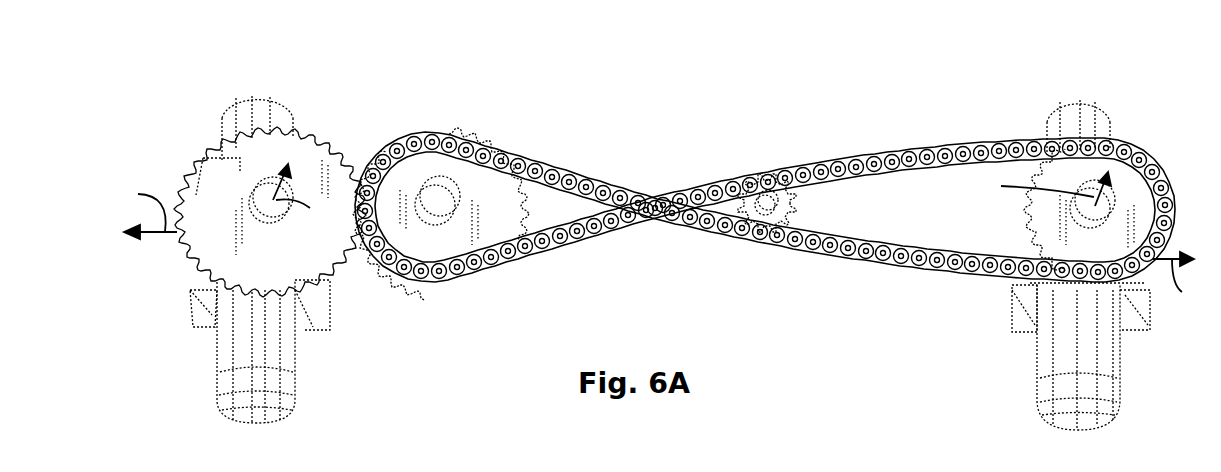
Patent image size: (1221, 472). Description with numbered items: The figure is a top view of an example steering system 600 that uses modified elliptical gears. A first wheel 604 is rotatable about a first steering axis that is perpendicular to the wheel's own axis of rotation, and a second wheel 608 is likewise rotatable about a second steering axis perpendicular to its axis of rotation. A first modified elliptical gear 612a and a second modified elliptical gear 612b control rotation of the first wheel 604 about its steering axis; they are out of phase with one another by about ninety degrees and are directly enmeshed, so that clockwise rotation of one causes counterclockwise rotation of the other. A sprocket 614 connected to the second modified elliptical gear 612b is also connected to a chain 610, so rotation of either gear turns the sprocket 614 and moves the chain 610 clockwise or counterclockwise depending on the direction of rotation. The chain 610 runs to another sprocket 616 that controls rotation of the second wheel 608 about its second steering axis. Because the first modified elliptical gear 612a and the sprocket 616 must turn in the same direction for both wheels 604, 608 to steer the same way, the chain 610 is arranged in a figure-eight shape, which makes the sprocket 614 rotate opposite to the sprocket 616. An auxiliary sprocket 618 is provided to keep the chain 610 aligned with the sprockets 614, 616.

The steering system 600 is at (166, 145).
The first wheel 604 is at (287, 396).
The second wheel 608 is at (1043, 345).
The chain 610 is at (885, 256).
The first modified elliptical gear 612a is at (210, 253).
The second modified elliptical gear 612b is at (500, 142).
The sprocket 614 is at (477, 233).
The sprocket 616 is at (1120, 185).
The auxiliary sprocket 618 is at (745, 190).